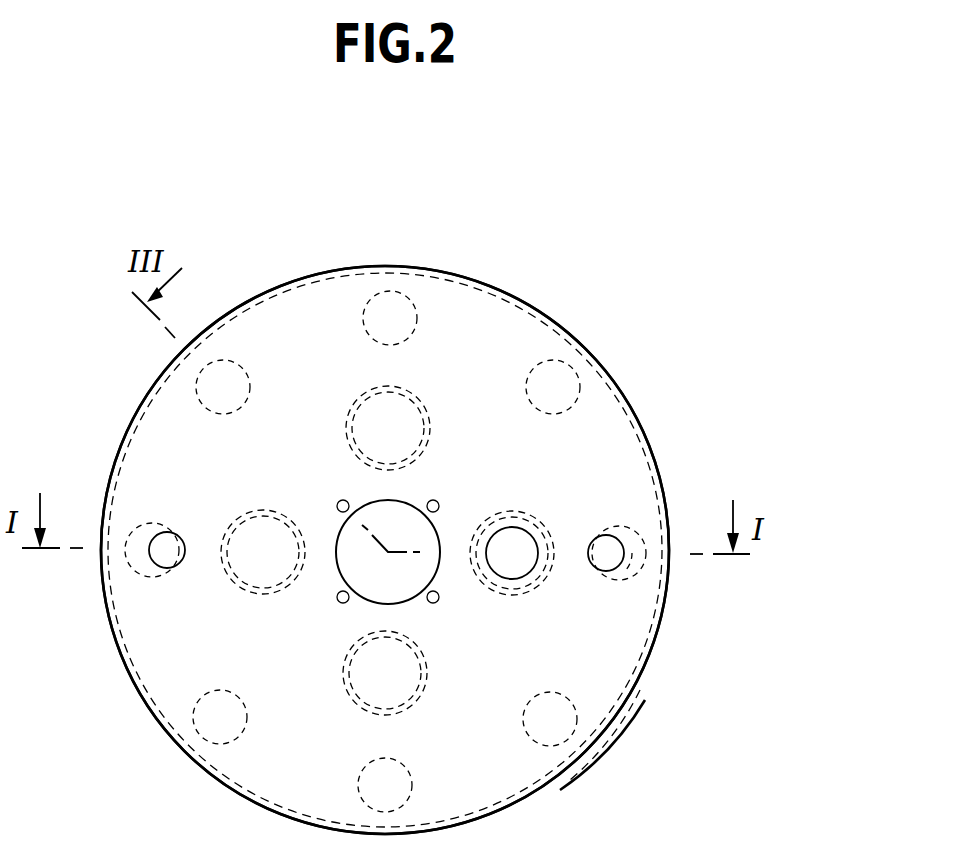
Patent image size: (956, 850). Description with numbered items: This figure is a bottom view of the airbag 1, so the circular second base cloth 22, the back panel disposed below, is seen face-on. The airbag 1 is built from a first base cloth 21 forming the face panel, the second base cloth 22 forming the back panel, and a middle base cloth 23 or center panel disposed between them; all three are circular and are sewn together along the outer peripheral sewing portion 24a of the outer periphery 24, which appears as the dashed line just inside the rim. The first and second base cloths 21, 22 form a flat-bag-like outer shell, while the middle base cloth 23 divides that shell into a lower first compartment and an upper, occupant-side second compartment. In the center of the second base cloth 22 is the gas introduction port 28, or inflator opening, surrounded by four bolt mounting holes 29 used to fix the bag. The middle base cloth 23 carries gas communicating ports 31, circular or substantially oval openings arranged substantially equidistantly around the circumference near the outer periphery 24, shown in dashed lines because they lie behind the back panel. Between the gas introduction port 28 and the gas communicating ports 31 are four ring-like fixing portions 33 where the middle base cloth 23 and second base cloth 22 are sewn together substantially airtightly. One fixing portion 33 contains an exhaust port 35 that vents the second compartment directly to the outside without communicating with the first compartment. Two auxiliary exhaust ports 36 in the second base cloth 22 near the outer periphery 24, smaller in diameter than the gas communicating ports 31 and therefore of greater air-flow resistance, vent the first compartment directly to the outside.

The airbag 1 is at (556, 306).
The first base cloth 21 is at (643, 423).
The second base cloth 22 is at (635, 460).
The middle base cloth 23 is at (635, 562).
The outer periphery 24 is at (618, 723).
The outer peripheral sewing portion 24a is at (635, 680).
The gas introduction port 28 is at (437, 572).
The bolt mounting holes 29 is at (337, 503).
The gas communicating ports 31 is at (367, 333).
The ring-like fixing portions 33 is at (410, 393).
The exhaust port 35 is at (512, 538).
The auxiliary exhaust ports 36 is at (153, 553).